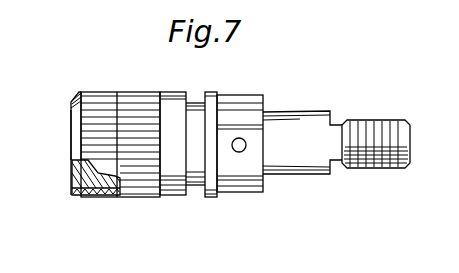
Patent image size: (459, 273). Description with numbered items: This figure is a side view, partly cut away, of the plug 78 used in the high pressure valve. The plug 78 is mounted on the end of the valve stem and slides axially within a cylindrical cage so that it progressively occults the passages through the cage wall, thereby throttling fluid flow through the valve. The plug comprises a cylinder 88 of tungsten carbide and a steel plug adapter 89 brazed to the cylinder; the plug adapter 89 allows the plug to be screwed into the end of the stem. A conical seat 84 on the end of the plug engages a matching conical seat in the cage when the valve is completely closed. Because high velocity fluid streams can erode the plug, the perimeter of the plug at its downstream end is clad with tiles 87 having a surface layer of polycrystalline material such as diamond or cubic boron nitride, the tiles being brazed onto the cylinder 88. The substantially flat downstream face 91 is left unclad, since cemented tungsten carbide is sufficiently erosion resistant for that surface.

The plug 78 is at (252, 199).
The conical seat 84 is at (76, 95).
The tiles 87 is at (105, 198).
The cylinder 88 is at (178, 95).
The plug adapter 89 is at (237, 102).
The downstream face 91 is at (72, 132).